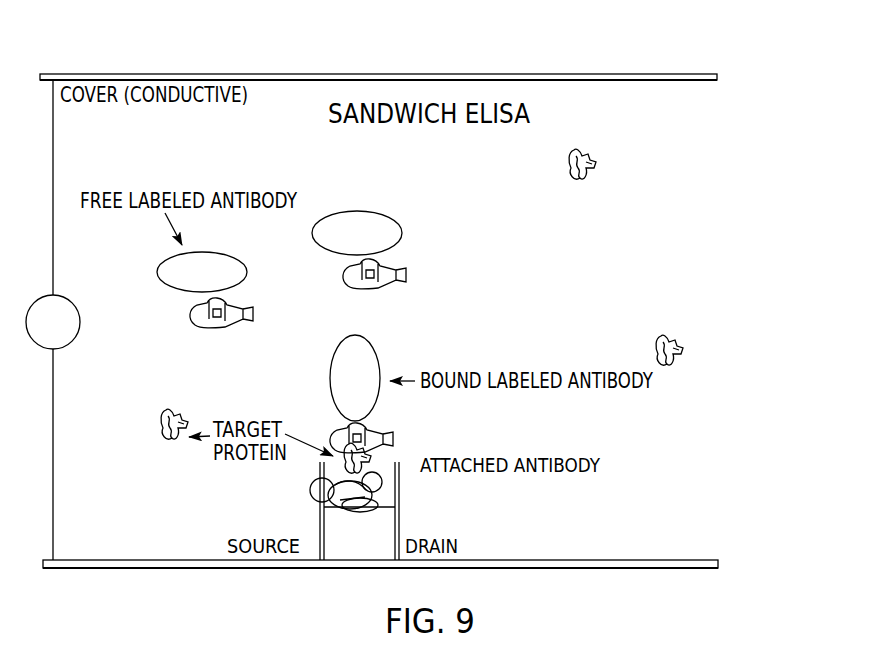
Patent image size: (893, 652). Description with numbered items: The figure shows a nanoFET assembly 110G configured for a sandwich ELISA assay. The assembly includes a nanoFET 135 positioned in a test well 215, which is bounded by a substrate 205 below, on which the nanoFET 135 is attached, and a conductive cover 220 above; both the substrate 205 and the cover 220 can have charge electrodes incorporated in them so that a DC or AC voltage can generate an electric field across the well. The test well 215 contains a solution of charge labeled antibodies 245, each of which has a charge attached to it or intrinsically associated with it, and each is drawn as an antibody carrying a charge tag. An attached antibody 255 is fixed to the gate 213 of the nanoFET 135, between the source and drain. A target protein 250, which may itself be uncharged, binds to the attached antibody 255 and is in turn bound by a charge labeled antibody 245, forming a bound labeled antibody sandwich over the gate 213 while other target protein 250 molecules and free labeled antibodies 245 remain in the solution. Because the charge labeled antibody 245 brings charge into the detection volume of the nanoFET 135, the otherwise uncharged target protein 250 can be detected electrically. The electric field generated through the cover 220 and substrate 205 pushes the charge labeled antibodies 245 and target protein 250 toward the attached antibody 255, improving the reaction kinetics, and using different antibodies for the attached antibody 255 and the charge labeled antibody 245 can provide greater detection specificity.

The nanoFET assembly 110G is at (127, 59).
The cover 220 is at (717, 77).
The substrate 205 is at (718, 563).
The test well 215 is at (659, 243).
The charge labeled antibody 245 is at (232, 257).
The target protein 250 is at (248, 415).
The attached antibody 255 is at (386, 463).
The nanoFET 135 is at (408, 507).
The gate 213 is at (362, 548).